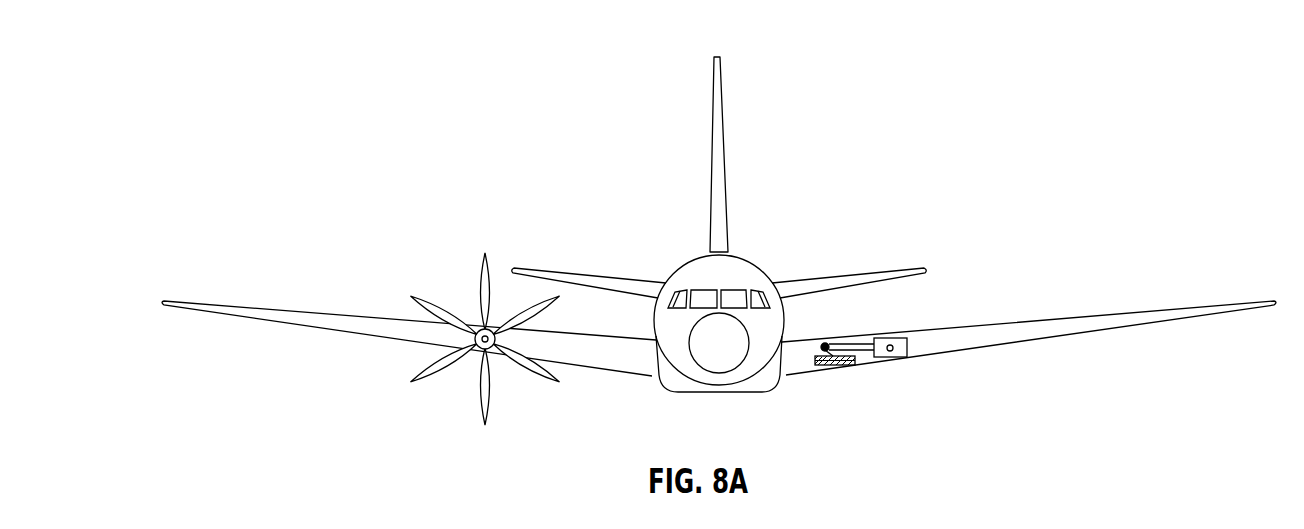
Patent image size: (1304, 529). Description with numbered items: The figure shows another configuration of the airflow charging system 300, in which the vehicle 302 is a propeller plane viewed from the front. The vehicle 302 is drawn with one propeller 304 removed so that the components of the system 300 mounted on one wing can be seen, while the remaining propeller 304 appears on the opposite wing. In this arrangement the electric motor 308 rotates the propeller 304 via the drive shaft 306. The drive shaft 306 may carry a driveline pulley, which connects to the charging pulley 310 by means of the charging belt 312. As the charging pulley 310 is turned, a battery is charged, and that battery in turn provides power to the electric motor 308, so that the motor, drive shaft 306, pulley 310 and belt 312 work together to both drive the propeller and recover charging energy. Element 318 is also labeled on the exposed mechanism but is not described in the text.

The system 300 is at (800, 180).
The vehicle 302 is at (684, 265).
The propeller 304 is at (421, 300).
The drive shaft 306 is at (890, 355).
The electric motor 308 is at (887, 358).
The charging pulley 310 is at (825, 344).
The charging belt 312 is at (852, 340).
The sensor 318 is at (835, 366).